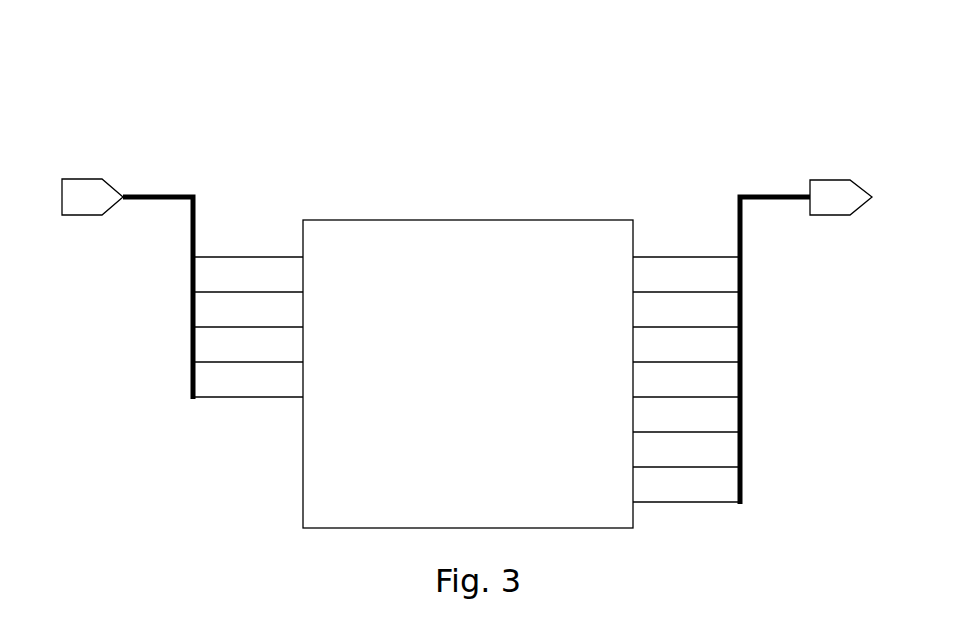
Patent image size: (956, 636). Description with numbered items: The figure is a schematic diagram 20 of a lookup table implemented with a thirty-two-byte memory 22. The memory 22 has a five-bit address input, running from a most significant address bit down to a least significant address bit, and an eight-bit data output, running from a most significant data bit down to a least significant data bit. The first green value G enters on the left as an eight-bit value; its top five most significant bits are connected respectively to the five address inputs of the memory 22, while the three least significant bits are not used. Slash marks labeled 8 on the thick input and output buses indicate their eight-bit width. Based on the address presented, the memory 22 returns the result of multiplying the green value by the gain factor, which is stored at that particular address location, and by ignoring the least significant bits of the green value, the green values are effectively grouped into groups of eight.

The 8-bit bus 8 is at (150, 212).
The schematic diagram 20 is at (752, 77).
The 32-byte memory 22 is at (585, 219).